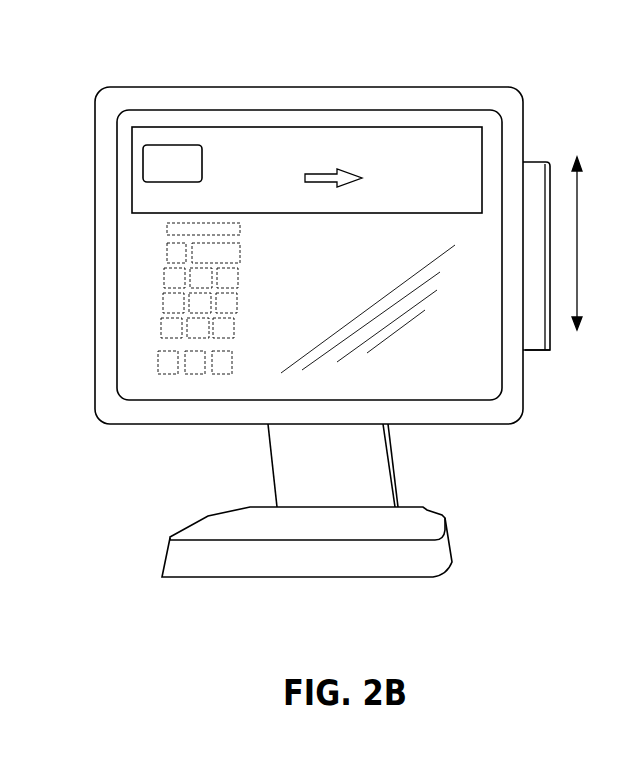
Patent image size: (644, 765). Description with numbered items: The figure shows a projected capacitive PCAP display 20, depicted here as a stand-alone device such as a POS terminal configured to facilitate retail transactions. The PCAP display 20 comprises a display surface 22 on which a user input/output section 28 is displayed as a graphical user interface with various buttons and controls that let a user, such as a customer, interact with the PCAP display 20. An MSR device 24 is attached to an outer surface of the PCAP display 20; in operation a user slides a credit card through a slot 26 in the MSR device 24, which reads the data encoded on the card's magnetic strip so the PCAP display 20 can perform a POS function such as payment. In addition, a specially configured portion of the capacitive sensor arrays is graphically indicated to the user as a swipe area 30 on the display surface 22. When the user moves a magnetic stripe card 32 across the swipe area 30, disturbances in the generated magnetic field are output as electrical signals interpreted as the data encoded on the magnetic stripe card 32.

The PCAP display 20 is at (390, 86).
The display surface 22 is at (322, 285).
The MSR device 24 is at (538, 160).
The slot 26 is at (547, 352).
The user input/output section 28 is at (138, 277).
The swipe area 30 is at (433, 198).
The magnetic stripe card 32 is at (170, 145).